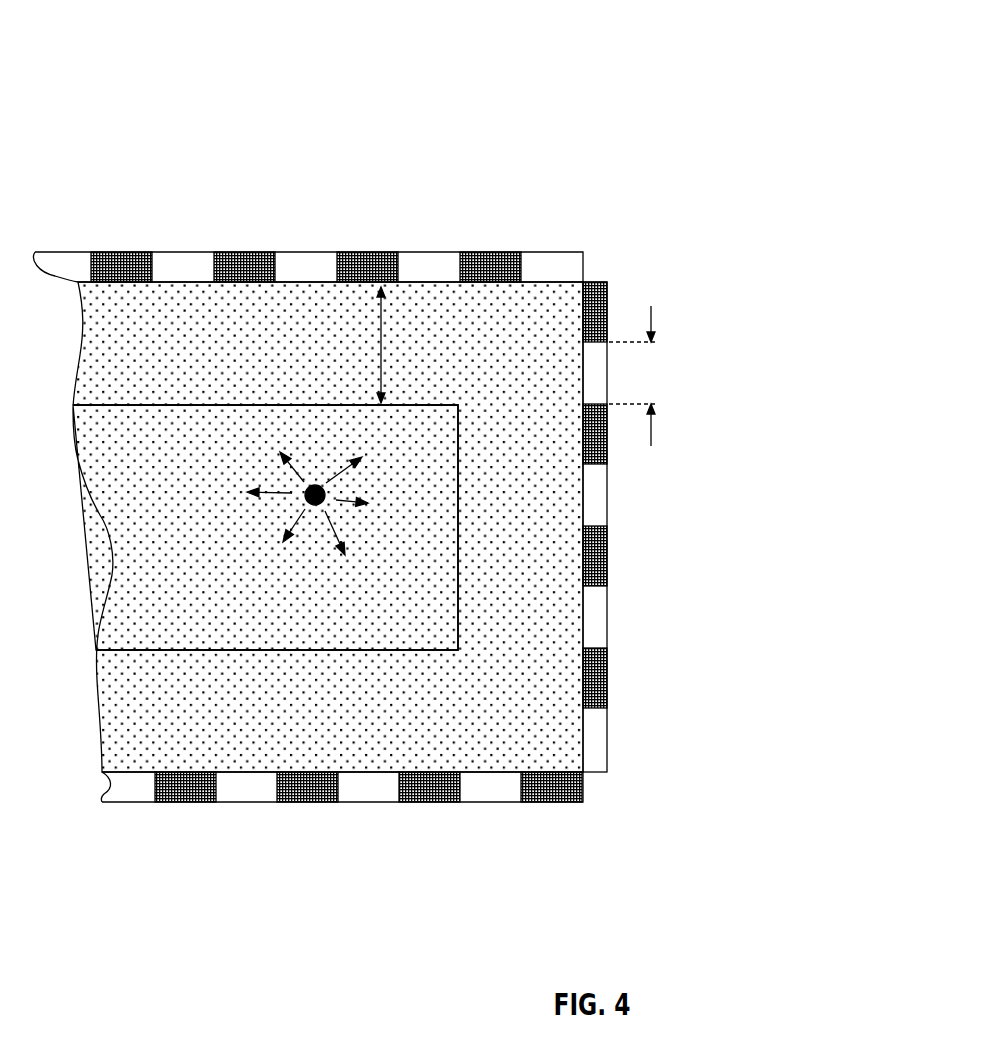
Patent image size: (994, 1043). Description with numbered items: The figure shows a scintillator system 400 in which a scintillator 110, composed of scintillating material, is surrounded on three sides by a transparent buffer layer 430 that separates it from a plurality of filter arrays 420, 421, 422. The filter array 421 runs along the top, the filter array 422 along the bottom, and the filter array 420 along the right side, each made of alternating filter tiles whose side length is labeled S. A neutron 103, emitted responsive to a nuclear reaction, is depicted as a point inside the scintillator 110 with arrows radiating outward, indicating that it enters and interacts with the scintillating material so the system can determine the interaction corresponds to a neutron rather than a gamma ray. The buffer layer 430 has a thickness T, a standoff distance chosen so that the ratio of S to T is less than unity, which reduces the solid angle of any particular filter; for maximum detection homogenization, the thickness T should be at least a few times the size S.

The scintillator system 400 is at (598, 77).
The filter array 421 is at (35, 240).
The filter array 422 is at (583, 812).
The filter array 420 is at (621, 282).
The buffer layer 430 is at (328, 527).
The scintillator 110 is at (265, 527).
The neutron 103 is at (312, 504).